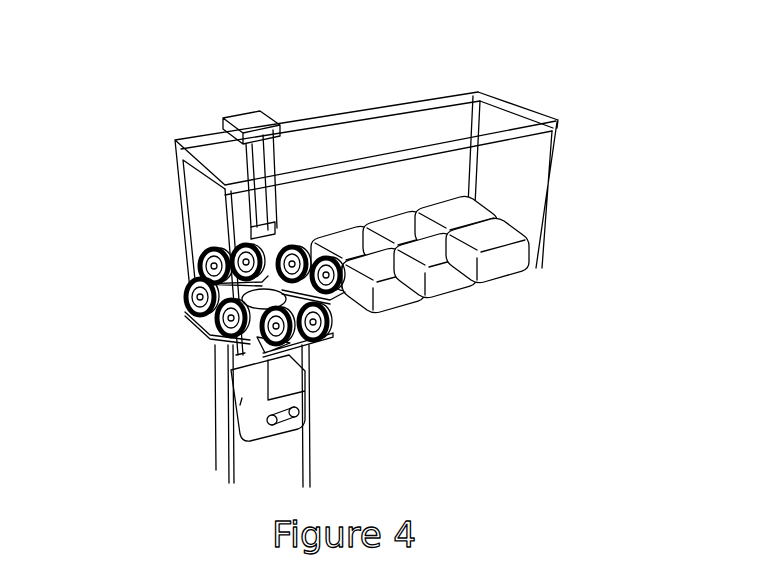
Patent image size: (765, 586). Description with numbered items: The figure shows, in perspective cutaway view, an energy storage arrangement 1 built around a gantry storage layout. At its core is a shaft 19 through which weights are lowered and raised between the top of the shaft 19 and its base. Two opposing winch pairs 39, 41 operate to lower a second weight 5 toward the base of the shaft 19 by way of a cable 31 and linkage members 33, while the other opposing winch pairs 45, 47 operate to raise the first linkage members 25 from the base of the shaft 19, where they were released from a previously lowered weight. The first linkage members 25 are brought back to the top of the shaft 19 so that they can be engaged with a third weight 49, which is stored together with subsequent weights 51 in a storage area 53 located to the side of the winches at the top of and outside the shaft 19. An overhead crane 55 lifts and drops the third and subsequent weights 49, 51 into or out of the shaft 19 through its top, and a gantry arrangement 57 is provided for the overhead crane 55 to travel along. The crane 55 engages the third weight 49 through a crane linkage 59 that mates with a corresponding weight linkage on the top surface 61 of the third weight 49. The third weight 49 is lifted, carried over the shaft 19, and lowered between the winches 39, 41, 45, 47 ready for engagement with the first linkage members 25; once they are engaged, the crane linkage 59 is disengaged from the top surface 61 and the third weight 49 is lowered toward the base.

The energy storage arrangement 1 is at (125, 334).
The second weight 5 is at (248, 393).
The shaft 19 is at (216, 442).
The first linkage members 25 is at (267, 274).
The cable 31 is at (305, 365).
The linkage members 33 is at (308, 405).
The winch pair 39 is at (218, 248).
The winch pair 41 is at (333, 323).
The winch pair 45 is at (188, 299).
The winch pair 47 is at (345, 285).
The third weight 49 is at (395, 276).
The subsequent weights 51 is at (466, 265).
The storage area 53 is at (400, 126).
The overhead crane 55 is at (250, 208).
The gantry arrangement 57 is at (510, 123).
The crane linkage 59 is at (282, 235).
The top surface 61 is at (472, 270).